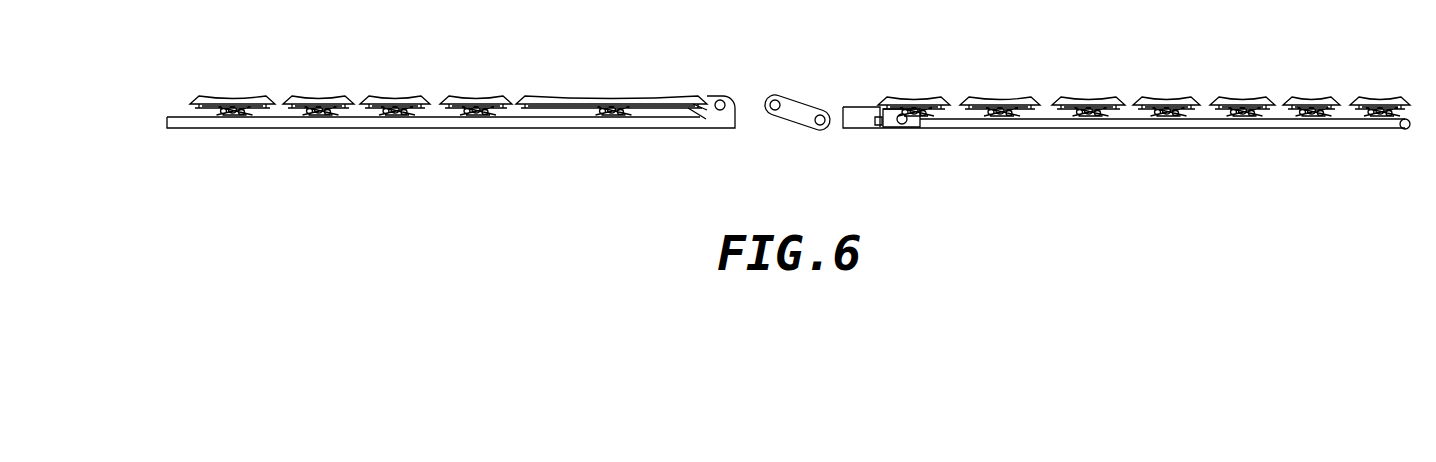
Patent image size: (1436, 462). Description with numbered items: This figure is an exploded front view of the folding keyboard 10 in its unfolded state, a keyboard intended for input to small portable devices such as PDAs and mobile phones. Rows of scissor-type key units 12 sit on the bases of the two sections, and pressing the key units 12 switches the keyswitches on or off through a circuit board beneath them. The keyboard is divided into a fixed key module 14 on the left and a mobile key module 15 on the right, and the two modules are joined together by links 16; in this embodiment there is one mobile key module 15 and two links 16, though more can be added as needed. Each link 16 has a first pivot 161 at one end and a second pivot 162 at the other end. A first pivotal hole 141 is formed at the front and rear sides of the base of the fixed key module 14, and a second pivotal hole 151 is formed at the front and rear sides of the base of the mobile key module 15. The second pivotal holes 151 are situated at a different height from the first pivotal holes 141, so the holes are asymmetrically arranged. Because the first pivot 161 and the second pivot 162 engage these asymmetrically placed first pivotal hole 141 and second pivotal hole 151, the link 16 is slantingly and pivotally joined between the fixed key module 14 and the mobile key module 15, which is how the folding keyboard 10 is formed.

The folding keyboard 10 is at (352, 88).
The key unit 12 is at (405, 97).
The fixed key module 14 is at (348, 136).
The first pivotal hole 141 is at (718, 110).
The mobile key module 15 is at (1262, 135).
The second pivotal hole 151 is at (906, 124).
The link 16 is at (797, 107).
The first pivot 161 is at (774, 111).
The second pivot 162 is at (823, 126).